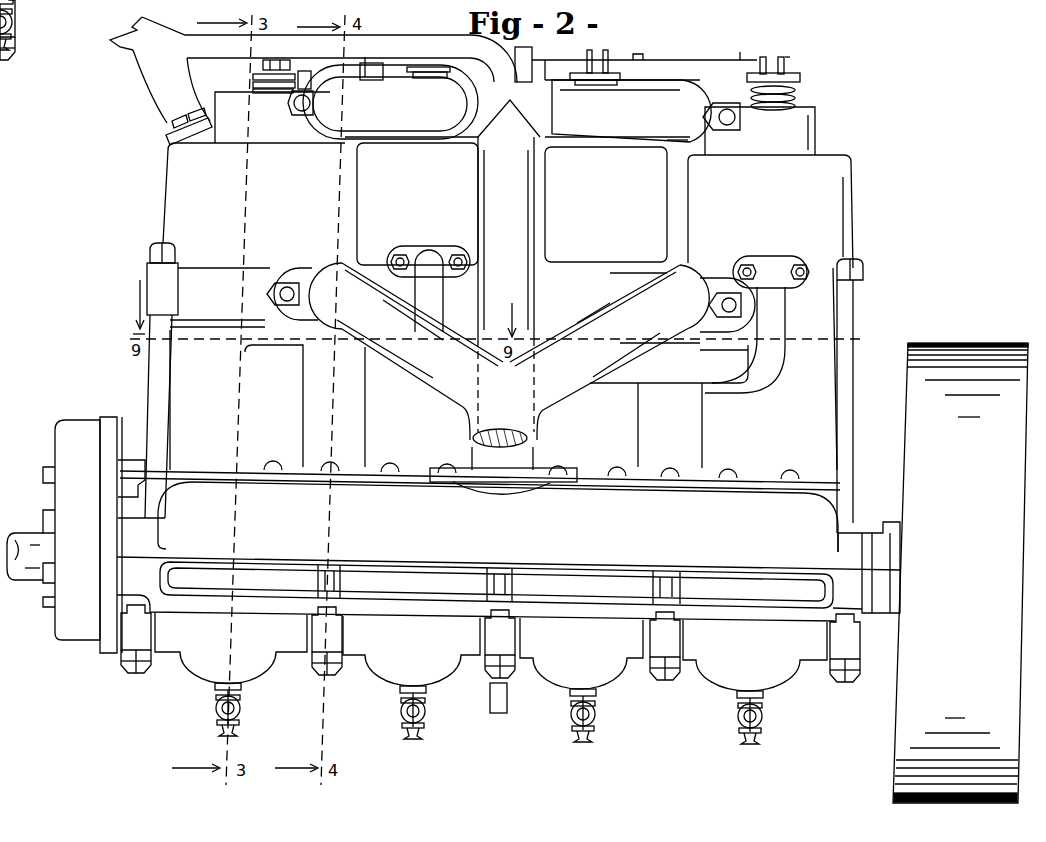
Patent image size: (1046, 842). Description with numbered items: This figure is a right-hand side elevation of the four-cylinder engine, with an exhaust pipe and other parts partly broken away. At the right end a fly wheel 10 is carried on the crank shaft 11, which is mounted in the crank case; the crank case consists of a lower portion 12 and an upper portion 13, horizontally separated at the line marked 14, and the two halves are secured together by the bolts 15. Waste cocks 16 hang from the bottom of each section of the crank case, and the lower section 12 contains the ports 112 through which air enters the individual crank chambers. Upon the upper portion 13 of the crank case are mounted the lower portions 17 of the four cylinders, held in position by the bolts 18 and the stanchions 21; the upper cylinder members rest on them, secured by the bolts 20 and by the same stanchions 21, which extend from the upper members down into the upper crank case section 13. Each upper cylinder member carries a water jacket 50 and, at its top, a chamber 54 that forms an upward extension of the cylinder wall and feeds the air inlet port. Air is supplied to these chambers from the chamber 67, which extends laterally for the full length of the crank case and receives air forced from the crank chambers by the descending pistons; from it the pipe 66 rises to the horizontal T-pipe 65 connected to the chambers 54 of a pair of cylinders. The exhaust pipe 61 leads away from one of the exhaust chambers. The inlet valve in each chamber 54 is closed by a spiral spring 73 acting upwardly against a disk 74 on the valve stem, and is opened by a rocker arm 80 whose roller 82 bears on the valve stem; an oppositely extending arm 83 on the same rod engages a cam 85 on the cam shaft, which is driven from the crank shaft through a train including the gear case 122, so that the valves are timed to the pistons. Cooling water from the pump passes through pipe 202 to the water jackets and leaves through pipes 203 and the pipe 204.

The fly wheel 10 is at (960, 573).
The crank shaft 11 is at (35, 572).
The lower portion of crank case 12 is at (491, 652).
The upper portion of crank case 13 is at (767, 491).
The line of separation 14 is at (566, 569).
The bolts 15 is at (136, 670).
The waste cocks 16 is at (243, 708).
The lower portion of cylinder 17 is at (503, 369).
The bolts 18 is at (283, 462).
The bolts 20 is at (332, 258).
The stanchions 21 is at (150, 367).
The water jacket 50 is at (508, 232).
The chamber 54 is at (515, 123).
The exhaust pipe 61 is at (509, 351).
The horizontal pipe 65 is at (448, 100).
The pipe 66 is at (513, 460).
The chamber 67 is at (498, 517).
The spiral spring 73 is at (260, 88).
The disk 74 is at (258, 66).
The rocker arm 80 is at (783, 57).
The roller 82 is at (772, 56).
The arm 83 is at (390, 65).
The cam 85 is at (303, 75).
The ports 112 is at (476, 591).
The gear case 122 is at (77, 627).
The pipe 202 is at (437, 287).
The pipes 203 is at (163, 85).
The pipe 204 is at (123, 47).